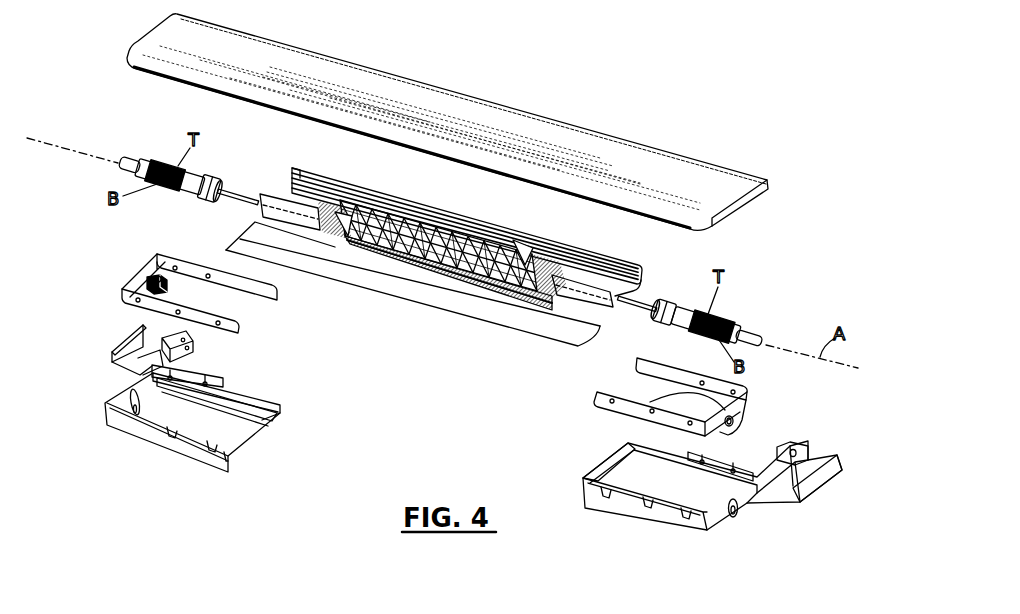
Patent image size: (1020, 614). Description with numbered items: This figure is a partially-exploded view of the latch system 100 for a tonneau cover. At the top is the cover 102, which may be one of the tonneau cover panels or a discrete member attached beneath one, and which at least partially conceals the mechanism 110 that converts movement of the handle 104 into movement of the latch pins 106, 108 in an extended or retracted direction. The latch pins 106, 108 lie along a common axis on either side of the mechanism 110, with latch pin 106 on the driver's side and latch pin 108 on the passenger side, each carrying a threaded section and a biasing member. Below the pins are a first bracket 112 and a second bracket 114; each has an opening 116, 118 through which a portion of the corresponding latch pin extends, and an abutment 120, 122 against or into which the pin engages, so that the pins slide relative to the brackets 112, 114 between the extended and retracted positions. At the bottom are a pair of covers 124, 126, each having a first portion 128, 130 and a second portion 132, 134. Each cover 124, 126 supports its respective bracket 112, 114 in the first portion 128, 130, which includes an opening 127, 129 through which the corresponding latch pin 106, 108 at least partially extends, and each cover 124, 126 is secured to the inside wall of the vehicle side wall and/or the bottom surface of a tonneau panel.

The latch system 100 is at (708, 82).
The cover 102 is at (467, 103).
The handle 104 is at (388, 287).
The latch pin 106 is at (128, 160).
The latch pin 108 is at (750, 332).
The mechanism 110 is at (449, 202).
The first bracket 112 is at (123, 282).
The second bracket 114 is at (755, 397).
The opening 116 is at (166, 288).
The opening 118 is at (735, 419).
The abutment 120 is at (158, 277).
The abutment 122 is at (745, 388).
The cover 124 is at (185, 455).
The cover 126 is at (643, 520).
The opening 127 is at (125, 392).
The first portion 128 is at (227, 417).
The opening 129 is at (740, 513).
The first portion 130 is at (635, 473).
The second portion 132 is at (127, 338).
The second portion 134 is at (833, 475).